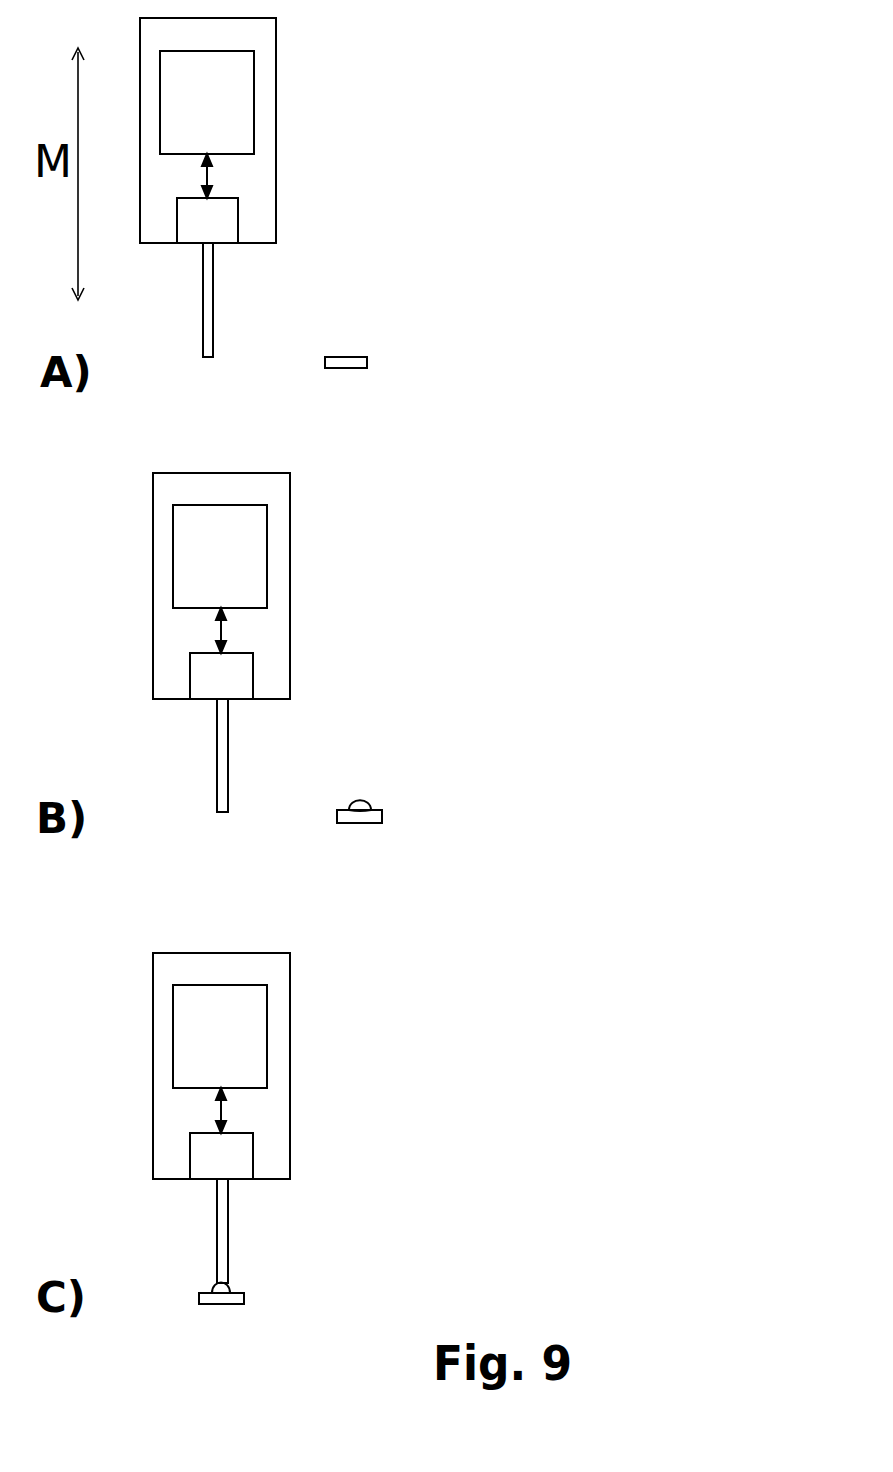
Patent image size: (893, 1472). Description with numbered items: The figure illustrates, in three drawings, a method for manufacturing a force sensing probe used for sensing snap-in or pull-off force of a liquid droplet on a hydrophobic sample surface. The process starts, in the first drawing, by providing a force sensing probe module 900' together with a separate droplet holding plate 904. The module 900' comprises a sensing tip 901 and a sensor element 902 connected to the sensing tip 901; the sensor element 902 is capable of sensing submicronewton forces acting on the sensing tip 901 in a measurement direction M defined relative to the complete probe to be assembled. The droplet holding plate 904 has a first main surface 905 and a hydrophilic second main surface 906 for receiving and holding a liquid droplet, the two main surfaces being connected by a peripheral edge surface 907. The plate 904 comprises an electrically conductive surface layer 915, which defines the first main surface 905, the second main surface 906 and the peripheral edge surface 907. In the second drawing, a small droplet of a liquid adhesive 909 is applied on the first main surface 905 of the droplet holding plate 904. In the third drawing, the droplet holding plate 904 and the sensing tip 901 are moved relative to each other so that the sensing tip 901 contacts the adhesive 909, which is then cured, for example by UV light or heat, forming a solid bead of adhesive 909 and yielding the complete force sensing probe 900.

The force sensing probe module 900' is at (338, 130).
The complete force sensing probe 900 is at (370, 1128).
The sensing tip 901 is at (214, 358).
The sensor element 902 is at (223, 232).
The droplet holding plate 904 is at (372, 352).
The first main surface 905 is at (345, 357).
The hydrophilic second main surface 906 is at (342, 370).
The peripheral edge surface 907 is at (367, 362).
The liquid adhesive 909 is at (352, 798).
The electrically conductive surface layer 915 is at (325, 367).